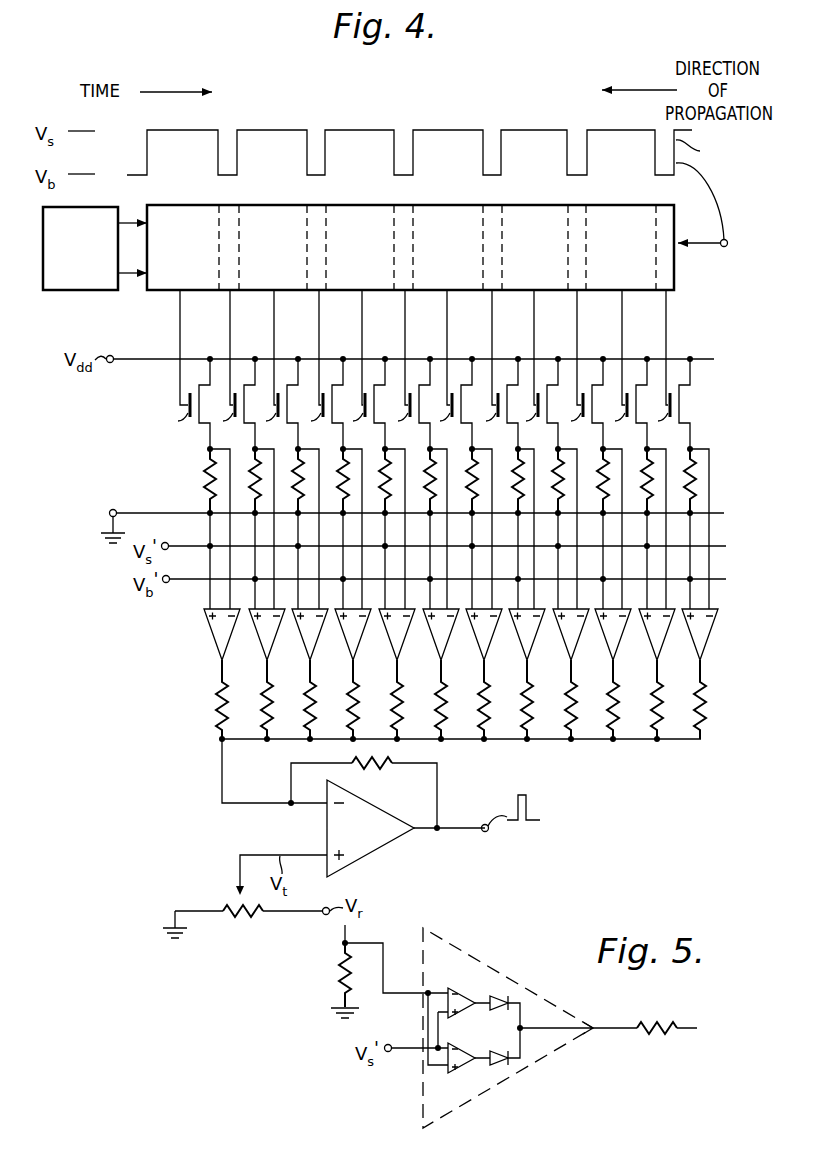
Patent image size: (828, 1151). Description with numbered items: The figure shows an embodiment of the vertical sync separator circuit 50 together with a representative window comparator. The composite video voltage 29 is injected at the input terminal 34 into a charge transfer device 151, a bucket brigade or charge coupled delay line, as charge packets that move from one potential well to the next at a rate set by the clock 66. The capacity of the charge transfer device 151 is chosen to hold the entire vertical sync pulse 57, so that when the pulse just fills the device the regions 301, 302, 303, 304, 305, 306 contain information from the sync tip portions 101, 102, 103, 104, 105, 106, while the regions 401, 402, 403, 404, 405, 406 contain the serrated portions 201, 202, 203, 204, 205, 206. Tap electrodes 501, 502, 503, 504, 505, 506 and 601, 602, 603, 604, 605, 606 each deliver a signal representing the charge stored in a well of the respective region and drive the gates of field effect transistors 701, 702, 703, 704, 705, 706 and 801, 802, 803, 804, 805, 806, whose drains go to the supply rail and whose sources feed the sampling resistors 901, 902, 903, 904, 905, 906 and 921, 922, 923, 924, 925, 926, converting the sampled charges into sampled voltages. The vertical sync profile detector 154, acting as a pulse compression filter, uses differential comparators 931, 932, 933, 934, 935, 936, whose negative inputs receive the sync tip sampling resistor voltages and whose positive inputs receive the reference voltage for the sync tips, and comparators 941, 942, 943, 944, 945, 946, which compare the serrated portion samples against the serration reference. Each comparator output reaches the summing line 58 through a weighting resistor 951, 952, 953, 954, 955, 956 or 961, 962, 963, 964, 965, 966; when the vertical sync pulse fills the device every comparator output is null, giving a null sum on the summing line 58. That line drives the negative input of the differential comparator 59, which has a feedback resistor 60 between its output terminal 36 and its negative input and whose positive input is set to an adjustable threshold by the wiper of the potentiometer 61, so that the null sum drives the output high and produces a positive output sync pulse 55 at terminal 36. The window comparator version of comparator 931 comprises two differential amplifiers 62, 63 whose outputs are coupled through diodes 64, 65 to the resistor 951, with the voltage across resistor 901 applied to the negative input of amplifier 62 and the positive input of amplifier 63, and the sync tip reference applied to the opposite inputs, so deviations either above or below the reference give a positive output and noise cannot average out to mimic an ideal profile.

In FIG. 4, the sync tip portion 101 is at (209, 128).
In FIG. 4, the sync tip portion 102 is at (271, 130).
In FIG. 4, the sync tip portion 103 is at (358, 130).
In FIG. 4, the sync tip portion 104 is at (443, 130).
In FIG. 4, the sync tip portion 105 is at (533, 130).
In FIG. 4, the sync tip portion 106 is at (619, 130).
In FIG. 4, the serrated portion 201 is at (229, 178).
In FIG. 4, the serrated portion 202 is at (318, 177).
In FIG. 4, the serrated portion 203 is at (405, 177).
In FIG. 4, the serrated portion 204 is at (493, 177).
In FIG. 4, the serrated portion 205 is at (585, 177).
In FIG. 4, the serrated portion 206 is at (669, 177).
In FIG. 4, the region 301 is at (179, 224).
In FIG. 4, the region 302 is at (268, 224).
In FIG. 4, the region 303 is at (359, 224).
In FIG. 4, the region 304 is at (438, 224).
In FIG. 4, the region 305 is at (528, 224).
In FIG. 4, the region 306 is at (614, 224).
In FIG. 4, the region 401 is at (219, 278).
In FIG. 4, the region 402 is at (307, 278).
In FIG. 4, the region 403 is at (394, 278).
In FIG. 4, the region 404 is at (483, 278).
In FIG. 4, the region 405 is at (568, 278).
In FIG. 4, the region 406 is at (656, 278).
In FIG. 4, the tap electrode 501 is at (180, 333).
In FIG. 4, the tap electrode 502 is at (274, 307).
In FIG. 4, the tap electrode 503 is at (362, 307).
In FIG. 4, the tap electrode 504 is at (447, 307).
In FIG. 4, the tap electrode 505 is at (534, 307).
In FIG. 4, the tap electrode 506 is at (622, 307).
In FIG. 4, the tap electrode 601 is at (230, 307).
In FIG. 4, the tap electrode 602 is at (319, 307).
In FIG. 4, the tap electrode 603 is at (405, 307).
In FIG. 4, the tap electrode 604 is at (492, 307).
In FIG. 4, the tap electrode 605 is at (577, 307).
In FIG. 4, the tap electrode 606 is at (666, 307).
In FIG. 4, the field effect transistor 701 is at (184, 404).
In FIG. 4, the field effect transistor 702 is at (282, 404).
In FIG. 4, the field effect transistor 703 is at (369, 404).
In FIG. 4, the field effect transistor 704 is at (455, 404).
In FIG. 4, the field effect transistor 705 is at (542, 404).
In FIG. 4, the field effect transistor 706 is at (631, 404).
In FIG. 4, the field effect transistor 801 is at (238, 404).
In FIG. 4, the field effect transistor 802 is at (325, 404).
In FIG. 4, the field effect transistor 803 is at (413, 404).
In FIG. 4, the field effect transistor 804 is at (500, 404).
In FIG. 4, the field effect transistor 805 is at (587, 404).
In FIG. 4, the field effect transistor 806 is at (674, 404).
In FIG. 4, the sampling resistor 901 is at (205, 485).
In FIG. 5, the sampling resistor 901 is at (340, 980).
In FIG. 4, the sampling resistor 902 is at (294, 487).
In FIG. 4, the sampling resistor 903 is at (381, 487).
In FIG. 4, the sampling resistor 904 is at (468, 487).
In FIG. 4, the sampling resistor 905 is at (554, 487).
In FIG. 4, the sampling resistor 906 is at (643, 487).
In FIG. 4, the sampling resistor 921 is at (251, 487).
In FIG. 4, the sampling resistor 922 is at (339, 487).
In FIG. 4, the sampling resistor 923 is at (426, 487).
In FIG. 4, the sampling resistor 924 is at (514, 487).
In FIG. 4, the sampling resistor 925 is at (599, 487).
In FIG. 4, the sampling resistor 926 is at (686, 487).
In FIG. 4, the differential comparator 931 is at (217, 642).
In FIG. 5, the differential comparator 931 is at (481, 962).
In FIG. 4, the differential comparator 932 is at (305, 642).
In FIG. 4, the differential comparator 933 is at (392, 642).
In FIG. 4, the differential comparator 934 is at (479, 642).
In FIG. 4, the differential comparator 935 is at (566, 642).
In FIG. 4, the differential comparator 936 is at (652, 642).
In FIG. 4, the differential comparator 941 is at (262, 642).
In FIG. 4, the differential comparator 942 is at (348, 642).
In FIG. 4, the differential comparator 943 is at (436, 642).
In FIG. 4, the differential comparator 944 is at (522, 642).
In FIG. 4, the differential comparator 945 is at (608, 642).
In FIG. 4, the differential comparator 946 is at (695, 642).
In FIG. 4, the weighting resistor 951 is at (218, 705).
In FIG. 5, the weighting resistor 951 is at (662, 1036).
In FIG. 4, the weighting resistor 952 is at (306, 706).
In FIG. 4, the weighting resistor 953 is at (393, 713).
In FIG. 4, the weighting resistor 954 is at (480, 713).
In FIG. 4, the weighting resistor 955 is at (567, 713).
In FIG. 4, the weighting resistor 956 is at (653, 713).
In FIG. 4, the weighting resistor 961 is at (263, 706).
In FIG. 4, the weighting resistor 962 is at (349, 713).
In FIG. 4, the weighting resistor 963 is at (437, 713).
In FIG. 4, the weighting resistor 964 is at (523, 713).
In FIG. 4, the weighting resistor 965 is at (609, 713).
In FIG. 4, the weighting resistor 966 is at (696, 713).
In FIG. 4, the charge transfer device 151 is at (410, 247).
In FIG. 4, the vertical sync pulse 57 is at (123, 164).
In FIG. 4, the clock 66 is at (70, 292).
In FIG. 4, the input terminal 34 is at (724, 247).
In FIG. 4, the composite video voltage 29 is at (706, 190).
In FIG. 4, the vertical sync profile detector 154 is at (153, 759).
In FIG. 4, the summing line 58 is at (222, 778).
In FIG. 4, the differential comparator 59 is at (372, 850).
In FIG. 4, the feedback resistor 60 is at (382, 770).
In FIG. 4, the potentiometer 61 is at (246, 918).
In FIG. 4, the output terminal 36 is at (487, 832).
In FIG. 4, the output sync pulse 55 is at (535, 808).
In FIG. 4, the sync separator circuit 50 is at (682, 798).
In FIG. 5, the differential amplifier 62 is at (460, 988).
In FIG. 5, the differential amplifier 63 is at (465, 1073).
In FIG. 5, the diode 64 is at (508, 1000).
In FIG. 5, the diode 65 is at (510, 1063).